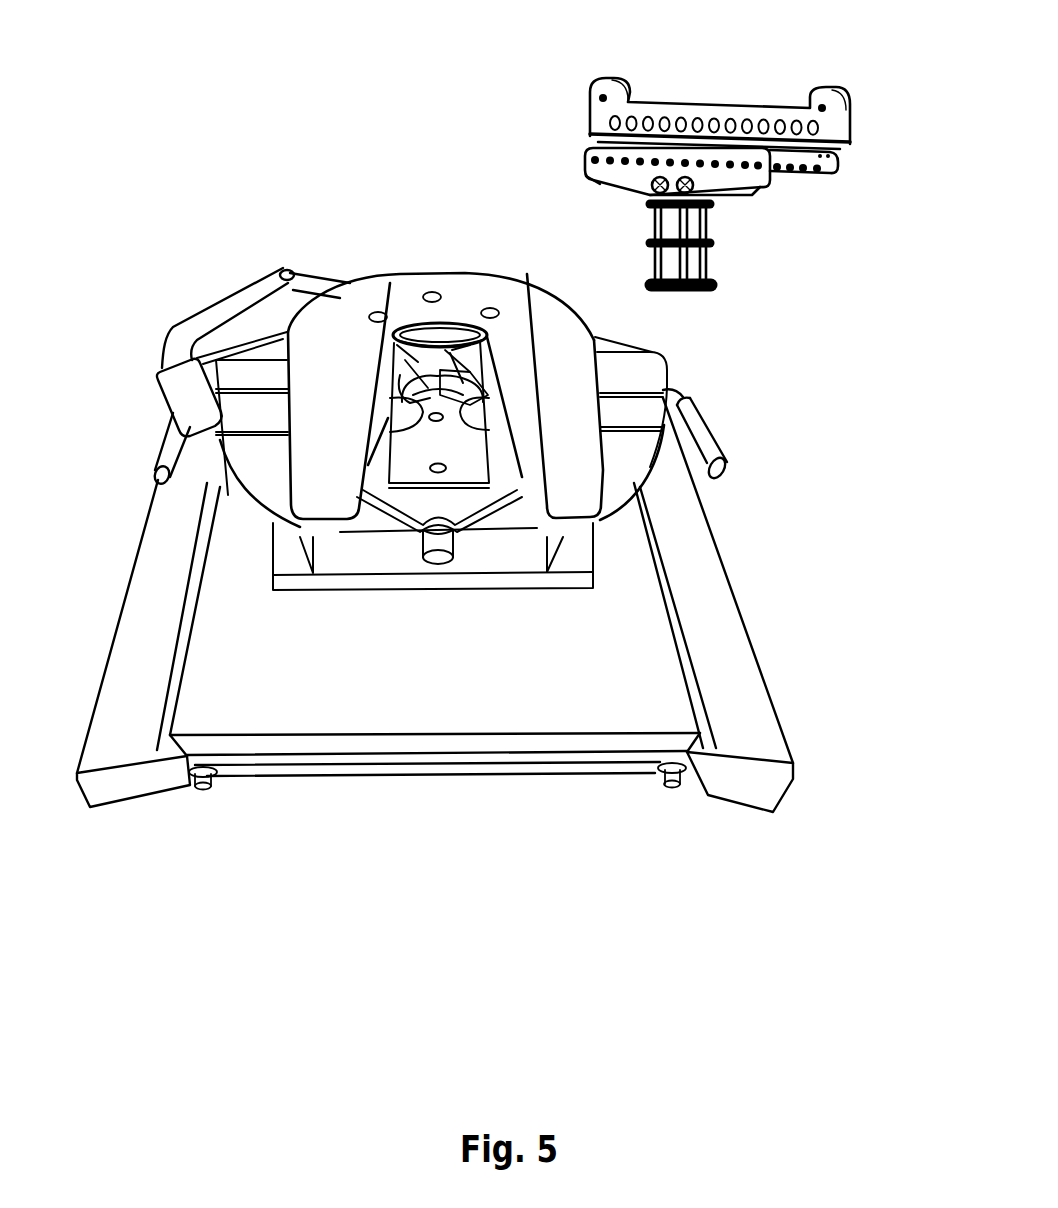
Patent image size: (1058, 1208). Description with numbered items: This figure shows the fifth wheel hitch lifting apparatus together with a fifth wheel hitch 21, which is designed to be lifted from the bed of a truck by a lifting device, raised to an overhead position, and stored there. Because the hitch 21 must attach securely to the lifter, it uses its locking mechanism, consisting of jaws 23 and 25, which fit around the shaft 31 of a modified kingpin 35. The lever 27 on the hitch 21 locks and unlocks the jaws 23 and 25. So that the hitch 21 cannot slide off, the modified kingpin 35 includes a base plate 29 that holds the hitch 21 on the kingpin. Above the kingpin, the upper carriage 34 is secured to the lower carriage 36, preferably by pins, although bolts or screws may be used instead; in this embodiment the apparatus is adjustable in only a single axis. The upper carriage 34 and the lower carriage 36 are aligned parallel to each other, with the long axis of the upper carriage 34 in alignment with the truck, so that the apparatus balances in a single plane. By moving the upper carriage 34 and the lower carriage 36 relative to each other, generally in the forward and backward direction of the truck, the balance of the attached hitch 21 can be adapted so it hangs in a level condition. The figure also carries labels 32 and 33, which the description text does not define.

The hitch 21 is at (435, 540).
The jaw 23 is at (402, 403).
The jaw 25 is at (490, 405).
The lever 27 is at (710, 442).
The base plate 29 is at (712, 292).
The shaft 31 is at (702, 262).
The mounting bracket 32 is at (875, 103).
The collar 33 is at (715, 243).
The upper carriage 34 is at (843, 168).
The modified kingpin 35 is at (634, 265).
The lower carriage 36 is at (608, 177).